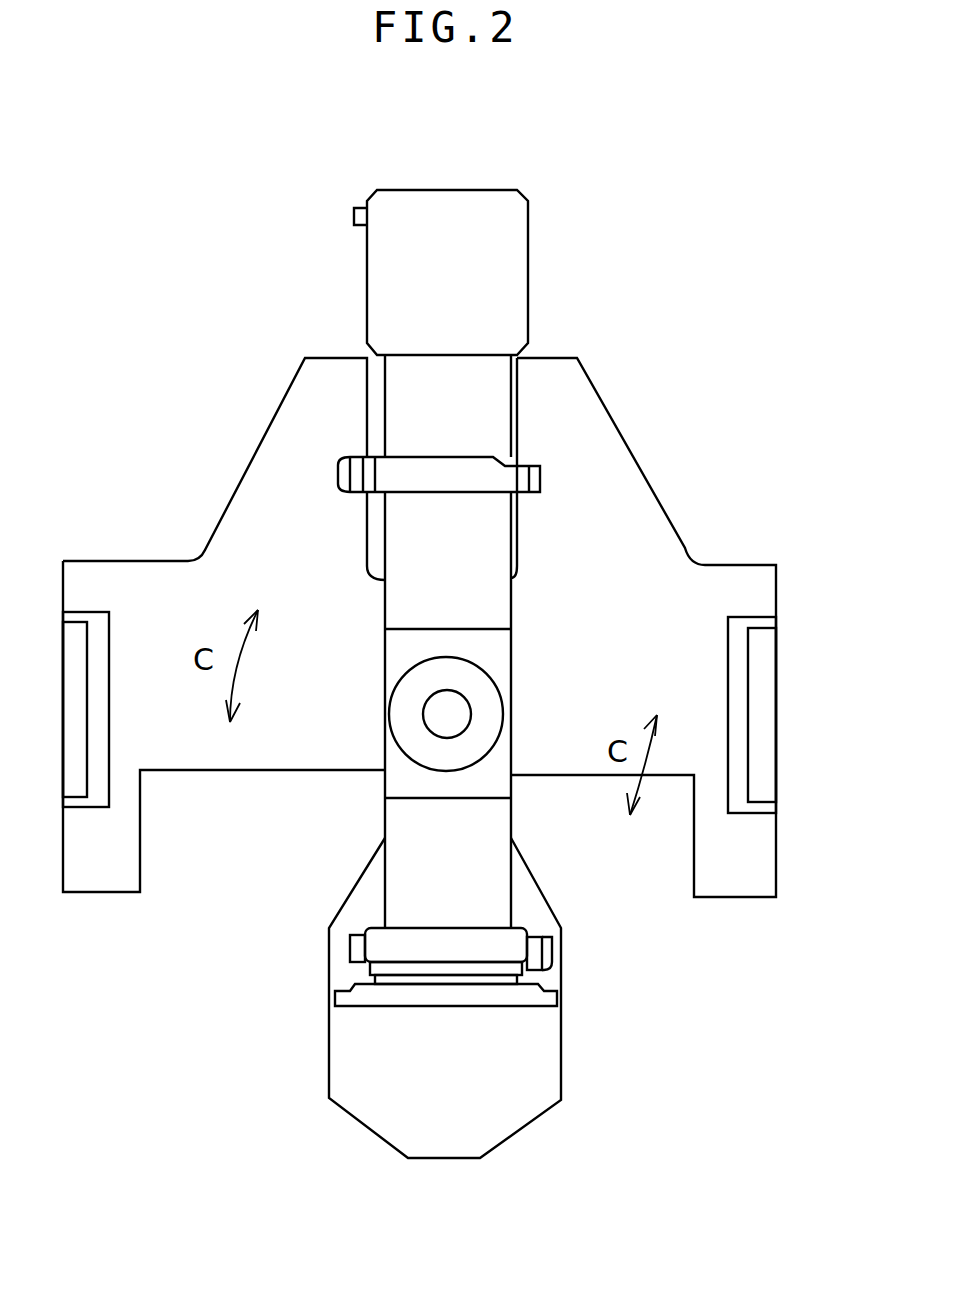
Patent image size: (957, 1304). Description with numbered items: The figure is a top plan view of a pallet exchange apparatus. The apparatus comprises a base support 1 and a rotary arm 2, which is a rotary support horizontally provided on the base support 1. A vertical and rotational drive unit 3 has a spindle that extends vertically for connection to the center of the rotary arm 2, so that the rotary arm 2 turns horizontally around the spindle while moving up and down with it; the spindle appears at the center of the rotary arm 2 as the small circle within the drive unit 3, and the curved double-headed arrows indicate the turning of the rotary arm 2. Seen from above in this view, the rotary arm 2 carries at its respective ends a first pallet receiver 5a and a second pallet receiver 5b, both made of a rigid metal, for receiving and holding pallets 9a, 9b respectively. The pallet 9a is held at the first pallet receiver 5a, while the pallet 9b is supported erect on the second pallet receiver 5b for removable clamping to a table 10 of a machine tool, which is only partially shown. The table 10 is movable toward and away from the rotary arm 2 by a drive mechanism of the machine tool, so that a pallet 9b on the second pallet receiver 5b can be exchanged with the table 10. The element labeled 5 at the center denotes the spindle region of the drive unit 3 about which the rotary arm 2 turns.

The base support 1 is at (776, 872).
The rotary arm 2 is at (478, 604).
The vertical and rotational drive unit 3 is at (403, 695).
The shaft 5 is at (471, 703).
The first pallet receiver 5a is at (436, 456).
The second pallet receiver 5b is at (552, 952).
The pallet 9a is at (367, 286).
The pallet 9b is at (450, 928).
The table 10 is at (500, 1145).